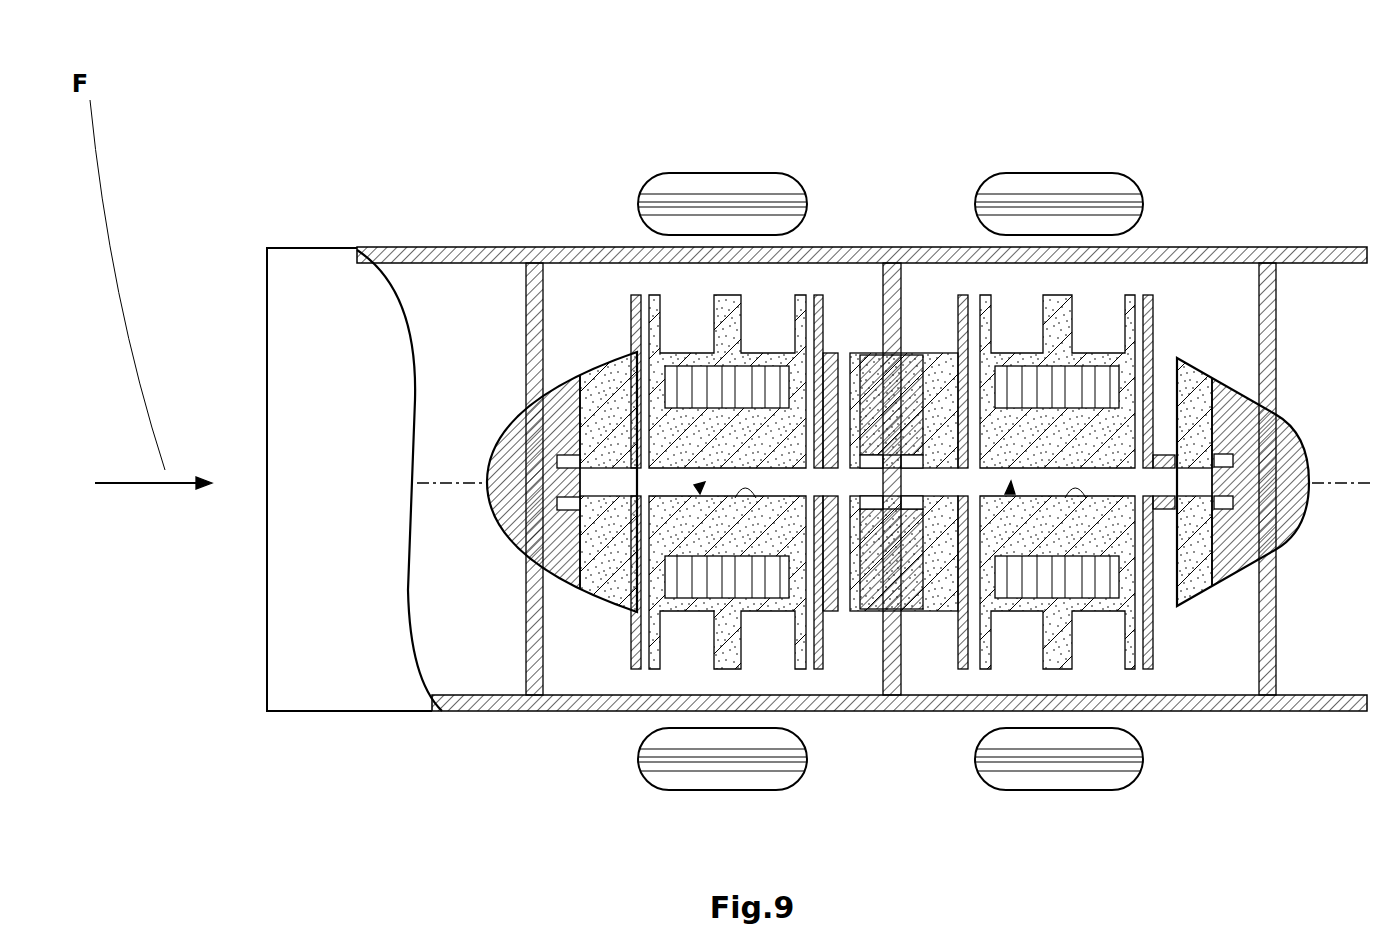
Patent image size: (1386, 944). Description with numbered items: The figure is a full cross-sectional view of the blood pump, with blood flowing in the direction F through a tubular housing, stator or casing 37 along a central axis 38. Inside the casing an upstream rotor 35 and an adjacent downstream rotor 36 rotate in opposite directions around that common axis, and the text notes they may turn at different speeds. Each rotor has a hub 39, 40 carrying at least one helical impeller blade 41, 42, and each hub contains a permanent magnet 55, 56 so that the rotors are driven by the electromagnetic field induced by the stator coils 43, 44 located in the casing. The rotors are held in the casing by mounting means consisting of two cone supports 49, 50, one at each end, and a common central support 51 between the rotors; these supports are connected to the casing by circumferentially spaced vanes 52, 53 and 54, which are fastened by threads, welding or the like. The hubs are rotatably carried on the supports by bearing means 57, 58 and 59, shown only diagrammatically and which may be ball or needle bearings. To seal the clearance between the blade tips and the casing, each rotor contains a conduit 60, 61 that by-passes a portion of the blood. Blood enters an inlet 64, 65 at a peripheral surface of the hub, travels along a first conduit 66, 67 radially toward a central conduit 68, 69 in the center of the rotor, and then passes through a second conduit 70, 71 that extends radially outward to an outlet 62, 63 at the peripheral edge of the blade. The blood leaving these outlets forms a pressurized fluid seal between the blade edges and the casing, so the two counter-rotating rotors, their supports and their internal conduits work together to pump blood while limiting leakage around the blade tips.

The upstream rotor 35 is at (490, 398).
The downstream rotor 36 is at (1315, 562).
The tubular housing 37 is at (313, 342).
The axis of rotation 38 is at (455, 480).
The hub 39 is at (602, 407).
The hub 40 is at (1097, 560).
The impeller blade 41 is at (743, 313).
The impeller blade 42 is at (1172, 376).
The stator coil 43 is at (718, 200).
The stator coil 44 is at (1083, 195).
The cone support 49 is at (502, 512).
The cone support 50 is at (1303, 445).
The common central support 51 is at (882, 330).
The vane 52 is at (525, 667).
The vane 53 is at (1278, 332).
The vane 54 is at (905, 305).
The permanent magnet 55 is at (700, 382).
The permanent magnet 56 is at (1032, 340).
The bearing means 57 is at (530, 548).
The bearing means 58 is at (1277, 463).
The bearing means 59 is at (910, 608).
The conduit 60 is at (610, 592).
The conduit 61 is at (1010, 492).
The outlet 62 is at (643, 668).
The outlet 63 is at (977, 668).
The inlet 64 is at (845, 350).
The inlet 65 is at (1167, 603).
The first conduit 66 is at (850, 570).
The first conduit 67 is at (1230, 248).
The central conduit 68 is at (735, 612).
The central conduit 69 is at (1073, 492).
The second conduit 70 is at (641, 323).
The second conduit 71 is at (965, 315).